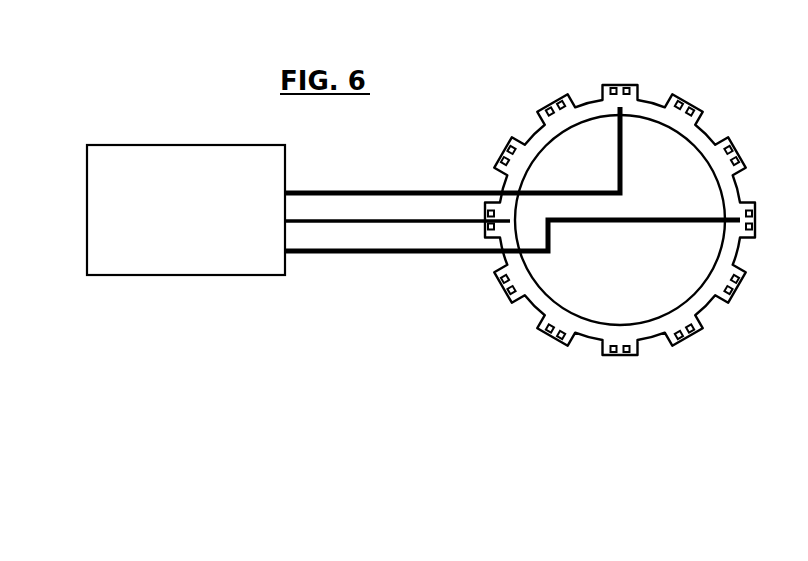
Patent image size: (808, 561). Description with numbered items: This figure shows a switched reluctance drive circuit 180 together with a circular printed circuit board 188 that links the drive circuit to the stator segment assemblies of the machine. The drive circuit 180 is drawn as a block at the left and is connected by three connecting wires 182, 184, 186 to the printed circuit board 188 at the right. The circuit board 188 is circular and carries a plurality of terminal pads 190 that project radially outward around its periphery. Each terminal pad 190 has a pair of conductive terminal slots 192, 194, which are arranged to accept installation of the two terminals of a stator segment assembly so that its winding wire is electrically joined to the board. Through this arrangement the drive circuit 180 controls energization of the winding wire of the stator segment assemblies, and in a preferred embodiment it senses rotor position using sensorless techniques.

The switched reluctance drive circuit 180 is at (160, 145).
The connecting wire 182 is at (408, 190).
The connecting wire 184 is at (367, 225).
The connecting wire 186 is at (416, 255).
The printed circuit board 188 is at (597, 110).
The terminal pad 190 is at (688, 98).
The conductive terminal slot 192 is at (615, 85).
The conductive terminal slot 194 is at (627, 83).